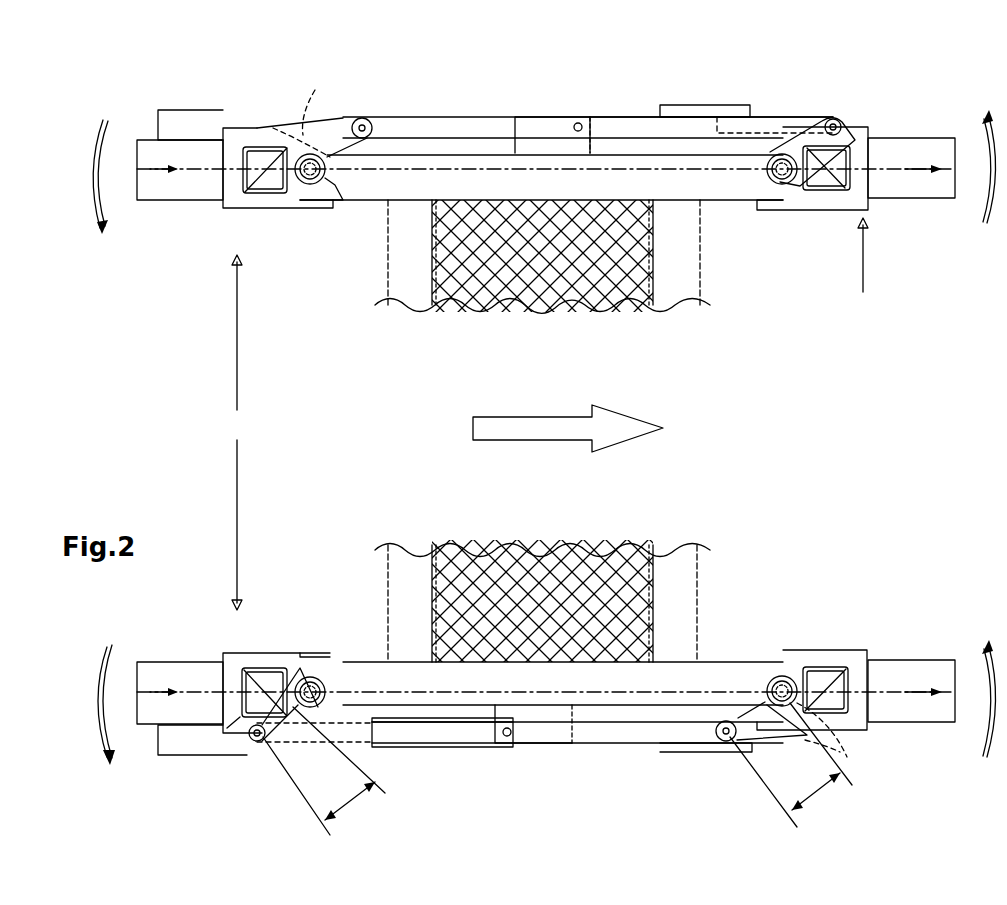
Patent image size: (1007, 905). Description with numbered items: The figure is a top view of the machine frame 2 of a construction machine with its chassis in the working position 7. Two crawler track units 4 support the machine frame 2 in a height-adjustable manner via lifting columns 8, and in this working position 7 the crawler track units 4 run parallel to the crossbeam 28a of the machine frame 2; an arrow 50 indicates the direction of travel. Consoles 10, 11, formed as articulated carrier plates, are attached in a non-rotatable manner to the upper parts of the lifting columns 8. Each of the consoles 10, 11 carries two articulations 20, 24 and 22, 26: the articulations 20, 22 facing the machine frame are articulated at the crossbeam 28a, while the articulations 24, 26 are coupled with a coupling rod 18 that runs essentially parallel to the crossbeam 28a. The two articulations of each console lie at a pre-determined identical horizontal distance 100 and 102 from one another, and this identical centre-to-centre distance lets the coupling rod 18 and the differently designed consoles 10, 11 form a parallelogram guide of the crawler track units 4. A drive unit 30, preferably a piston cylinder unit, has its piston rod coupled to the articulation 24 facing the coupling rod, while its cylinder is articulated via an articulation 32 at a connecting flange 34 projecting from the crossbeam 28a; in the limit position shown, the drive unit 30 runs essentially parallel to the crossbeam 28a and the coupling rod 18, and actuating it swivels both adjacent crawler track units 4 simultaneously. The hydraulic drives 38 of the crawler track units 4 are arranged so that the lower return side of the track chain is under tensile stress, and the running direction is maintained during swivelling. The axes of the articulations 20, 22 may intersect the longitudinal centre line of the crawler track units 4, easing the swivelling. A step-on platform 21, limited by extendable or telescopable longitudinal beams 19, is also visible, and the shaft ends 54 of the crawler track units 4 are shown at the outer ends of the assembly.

The machine frame 2 is at (388, 240).
The crawler track units 4 is at (865, 265).
The working position 7 is at (238, 432).
The lifting columns 8 is at (238, 130).
The console 10 is at (305, 112).
The console 11 is at (333, 128).
The coupling rod 18 is at (430, 128).
The longitudinal beams 19 is at (395, 565).
The articulation 20 is at (306, 185).
The step-on platform 21 is at (607, 290).
The articulation 22 is at (775, 200).
The articulation 24 is at (833, 119).
The articulation 26 is at (362, 118).
The crossbeam 28a is at (723, 185).
The drive unit 30 is at (620, 128).
The articulation 32 is at (503, 732).
The connecting flange 34 is at (525, 128).
The hydraulic drives 38 is at (176, 110).
The arrow 50 is at (540, 422).
The shaft end 54 is at (196, 160).
The horizontal distance 100 is at (350, 802).
The horizontal distance 102 is at (820, 792).